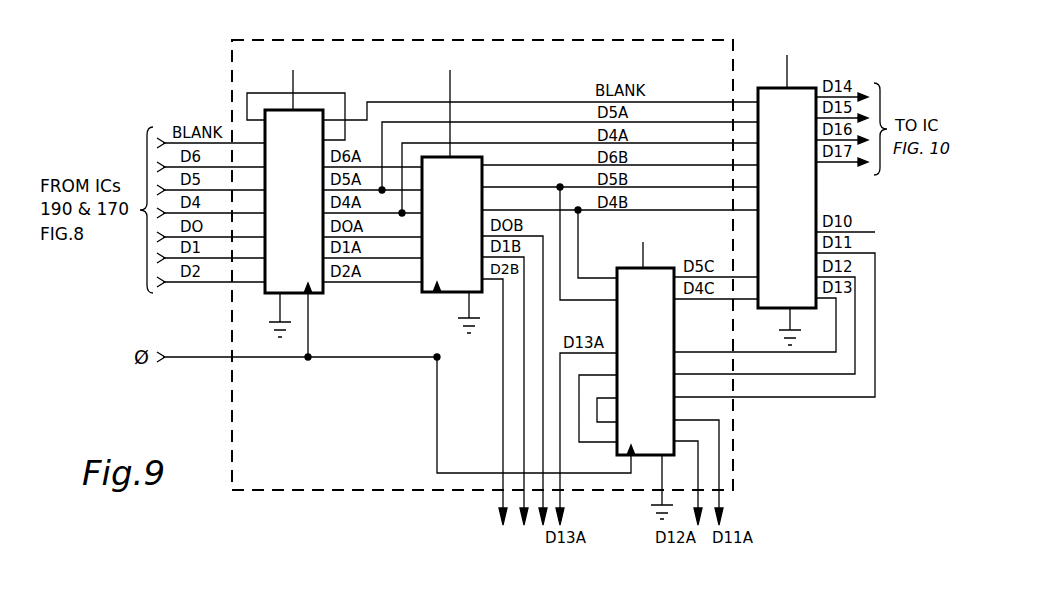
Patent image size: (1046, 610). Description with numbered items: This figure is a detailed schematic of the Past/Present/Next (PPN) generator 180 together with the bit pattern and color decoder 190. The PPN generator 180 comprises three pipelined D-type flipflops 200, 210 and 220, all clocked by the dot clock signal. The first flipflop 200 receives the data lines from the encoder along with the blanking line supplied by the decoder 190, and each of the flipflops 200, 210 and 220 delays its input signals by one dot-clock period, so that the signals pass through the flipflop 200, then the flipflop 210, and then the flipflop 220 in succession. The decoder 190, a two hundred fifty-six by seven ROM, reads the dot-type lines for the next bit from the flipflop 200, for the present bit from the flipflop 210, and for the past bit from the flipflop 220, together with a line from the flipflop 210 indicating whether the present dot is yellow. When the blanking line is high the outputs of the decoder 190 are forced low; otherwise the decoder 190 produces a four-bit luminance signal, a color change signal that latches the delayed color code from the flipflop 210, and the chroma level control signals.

The Past/Present/Next (PPN) generator 180 is at (609, 37).
The bit pattern and color decoder 190 is at (798, 208).
The flipflop 200 is at (304, 212).
The flipflop 210 is at (462, 228).
The flipflop 220 is at (656, 378).